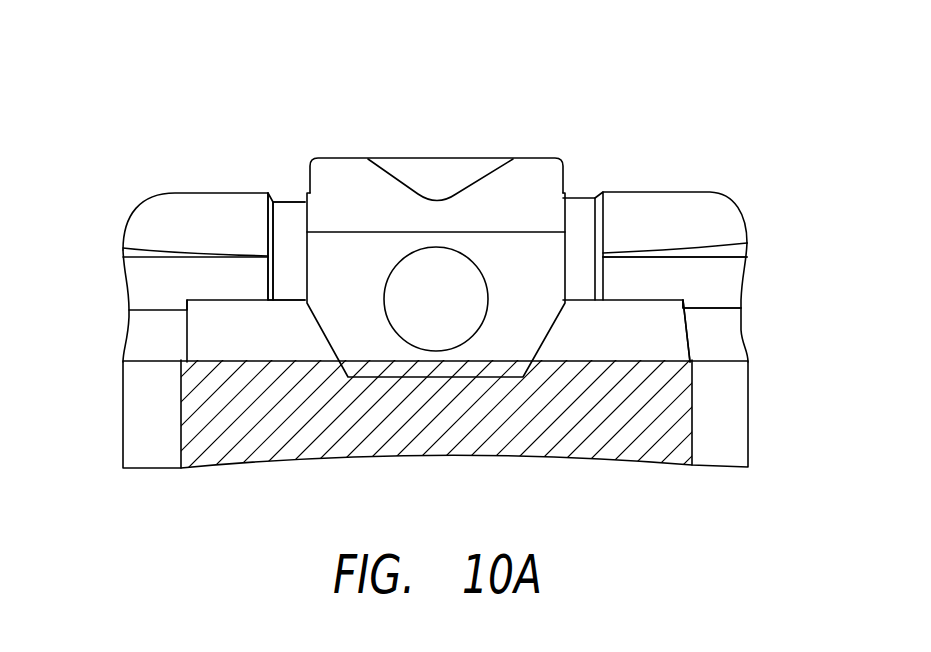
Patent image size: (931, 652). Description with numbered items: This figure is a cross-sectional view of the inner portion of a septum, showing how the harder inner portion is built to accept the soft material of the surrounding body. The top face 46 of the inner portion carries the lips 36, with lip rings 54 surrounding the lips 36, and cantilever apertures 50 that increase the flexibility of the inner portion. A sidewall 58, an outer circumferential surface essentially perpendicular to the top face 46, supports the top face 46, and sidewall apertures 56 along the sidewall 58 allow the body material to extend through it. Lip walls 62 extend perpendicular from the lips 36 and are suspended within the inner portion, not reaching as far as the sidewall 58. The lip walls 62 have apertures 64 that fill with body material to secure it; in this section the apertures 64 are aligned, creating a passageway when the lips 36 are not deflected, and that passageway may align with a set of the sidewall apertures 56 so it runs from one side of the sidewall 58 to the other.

The lips 36 is at (473, 172).
The top face 46 is at (717, 193).
The cantilever apertures 50 is at (295, 222).
The lip rings 54 is at (545, 177).
The sidewall apertures 56 is at (745, 282).
The sidewall 58 is at (750, 410).
The lip walls 62 is at (532, 312).
The apertures 64 is at (415, 313).